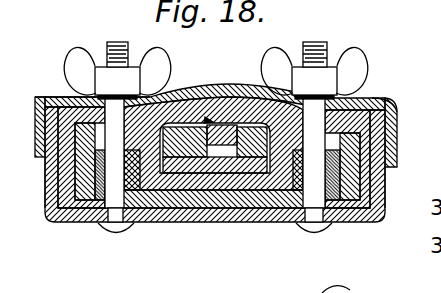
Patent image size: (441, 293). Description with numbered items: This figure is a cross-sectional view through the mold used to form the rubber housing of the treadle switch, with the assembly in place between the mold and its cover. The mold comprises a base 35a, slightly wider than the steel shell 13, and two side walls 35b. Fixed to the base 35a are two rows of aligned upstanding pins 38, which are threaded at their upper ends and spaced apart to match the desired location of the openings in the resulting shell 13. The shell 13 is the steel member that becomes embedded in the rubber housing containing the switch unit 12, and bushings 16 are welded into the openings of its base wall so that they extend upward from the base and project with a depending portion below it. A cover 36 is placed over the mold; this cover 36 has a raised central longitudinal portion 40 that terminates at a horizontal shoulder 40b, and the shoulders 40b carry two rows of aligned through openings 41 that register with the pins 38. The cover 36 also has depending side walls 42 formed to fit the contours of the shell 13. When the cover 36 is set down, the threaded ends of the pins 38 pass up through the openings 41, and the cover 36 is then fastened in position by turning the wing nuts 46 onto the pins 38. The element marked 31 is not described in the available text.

The switch unit 12 is at (220, 222).
The steel shell 13 is at (152, 223).
The bushing 16 is at (87, 222).
The central insert 31 is at (246, 100).
The base 35a is at (277, 222).
The side wall 35b is at (50, 183).
The cover 36 is at (54, 95).
The pin 38 is at (125, 93).
The raised central longitudinal portion 40 is at (197, 90).
The horizontal shoulder 40b is at (377, 97).
The through opening 41 is at (77, 65).
The depending side wall 42 is at (33, 127).
The wing nut 46 is at (115, 78).